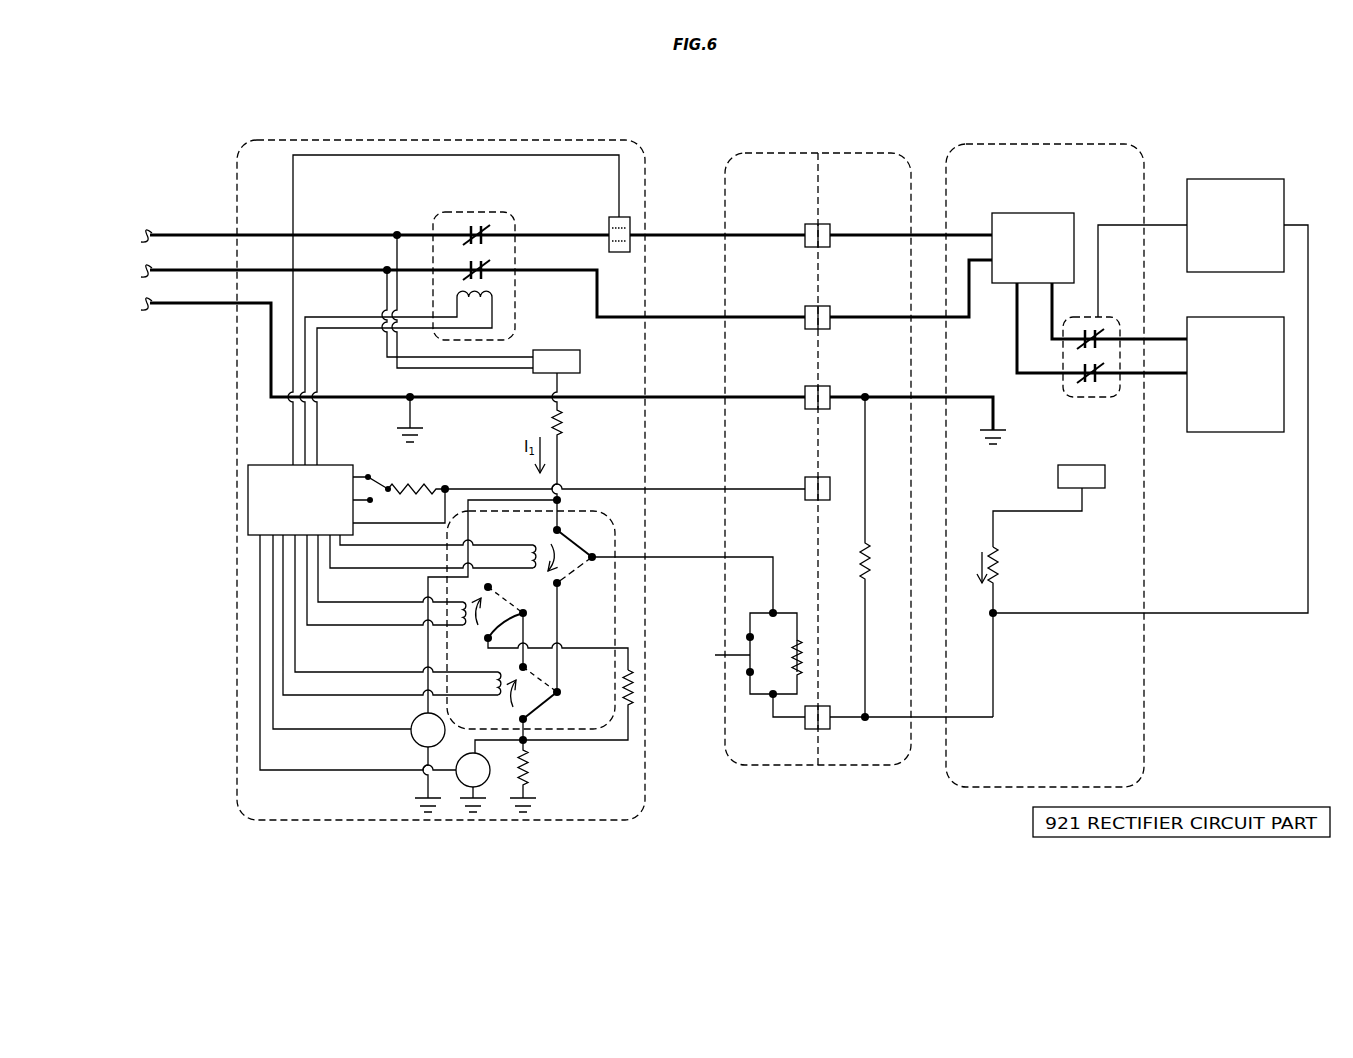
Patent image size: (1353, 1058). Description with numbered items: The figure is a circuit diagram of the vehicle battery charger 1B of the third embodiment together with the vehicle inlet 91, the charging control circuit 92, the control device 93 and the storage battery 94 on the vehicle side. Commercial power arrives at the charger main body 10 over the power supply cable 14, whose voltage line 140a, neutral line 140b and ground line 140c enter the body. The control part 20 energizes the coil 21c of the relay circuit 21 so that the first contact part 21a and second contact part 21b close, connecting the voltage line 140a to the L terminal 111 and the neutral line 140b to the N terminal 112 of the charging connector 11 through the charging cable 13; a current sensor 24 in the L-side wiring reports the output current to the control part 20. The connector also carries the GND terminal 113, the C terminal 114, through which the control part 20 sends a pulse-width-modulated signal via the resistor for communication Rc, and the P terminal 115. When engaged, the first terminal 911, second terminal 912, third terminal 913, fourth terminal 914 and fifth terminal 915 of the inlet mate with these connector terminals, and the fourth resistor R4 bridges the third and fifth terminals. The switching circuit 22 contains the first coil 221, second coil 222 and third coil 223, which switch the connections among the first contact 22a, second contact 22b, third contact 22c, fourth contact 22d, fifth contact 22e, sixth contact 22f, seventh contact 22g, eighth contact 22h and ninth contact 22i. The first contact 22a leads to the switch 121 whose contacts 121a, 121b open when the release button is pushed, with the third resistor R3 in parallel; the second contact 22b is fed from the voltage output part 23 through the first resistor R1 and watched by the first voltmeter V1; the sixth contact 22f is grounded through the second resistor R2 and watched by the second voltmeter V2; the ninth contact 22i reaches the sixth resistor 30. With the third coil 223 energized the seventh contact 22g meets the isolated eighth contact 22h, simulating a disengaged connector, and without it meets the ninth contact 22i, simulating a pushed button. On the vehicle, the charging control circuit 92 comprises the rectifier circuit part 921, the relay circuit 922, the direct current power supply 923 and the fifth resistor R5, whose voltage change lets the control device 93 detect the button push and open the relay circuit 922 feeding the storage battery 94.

The vehicle battery charger 1B is at (298, 113).
The charger main body 10 is at (537, 140).
The charging cable 13 is at (671, 163).
The power supply cable 14 is at (542, 297).
The voltage line 140a is at (152, 234).
The neutral line 140b is at (152, 269).
The ground line 140c is at (152, 302).
The relay circuit 21 is at (452, 210).
The first contact part 21a is at (499, 216).
The second contact part 21b is at (495, 251).
The coil 21c is at (493, 300).
The current sensor 24 is at (632, 221).
The voltage output part 23 is at (580, 357).
The control part 20 is at (282, 465).
The resistor for communication Rc is at (401, 489).
The first resistor R1 is at (561, 434).
The switching circuit 22 is at (585, 510).
The first coil 221 is at (530, 545).
The second coil 222 is at (496, 698).
The third coil 223 is at (457, 603).
The first contact 22a is at (596, 557).
The second contact 22b is at (560, 530).
The third contact 22c is at (562, 583).
The fourth contact 22d is at (560, 690).
The fifth contact 22e is at (525, 664).
The sixth contact 22f is at (527, 719).
The seventh contact 22g is at (527, 613).
The eighth contact 22h is at (492, 587).
The ninth contact 22i is at (487, 641).
The sixth resistor 30 is at (632, 700).
The second resistor R2 is at (528, 781).
The first voltmeter V1 is at (413, 722).
The second voltmeter V2 is at (456, 765).
The charging connector 11 is at (767, 152).
The vehicle inlet 91 is at (856, 152).
The L terminal 111 is at (808, 223).
The N terminal 112 is at (808, 305).
The GND terminal 113 is at (808, 385).
The C terminal 114 is at (808, 477).
The P terminal 115 is at (808, 730).
The first terminal 911 is at (828, 223).
The second terminal 912 is at (828, 305).
The third terminal 913 is at (828, 385).
The fourth terminal 914 is at (826, 477).
The fifth terminal 915 is at (827, 730).
The switch 121 is at (740, 681).
The contact 121a is at (748, 637).
The contact 121b is at (748, 672).
The third resistor R3 is at (801, 645).
The fourth resistor R4 is at (869, 556).
The charging control circuit 92 is at (1092, 143).
The rectifier circuit part 921 is at (1046, 212).
The relay circuit 922 is at (1062, 384).
The direct current power supply 923 is at (1085, 464).
The fifth resistor R5 is at (999, 576).
The control device 93 is at (1244, 178).
The storage battery 94 is at (1244, 316).